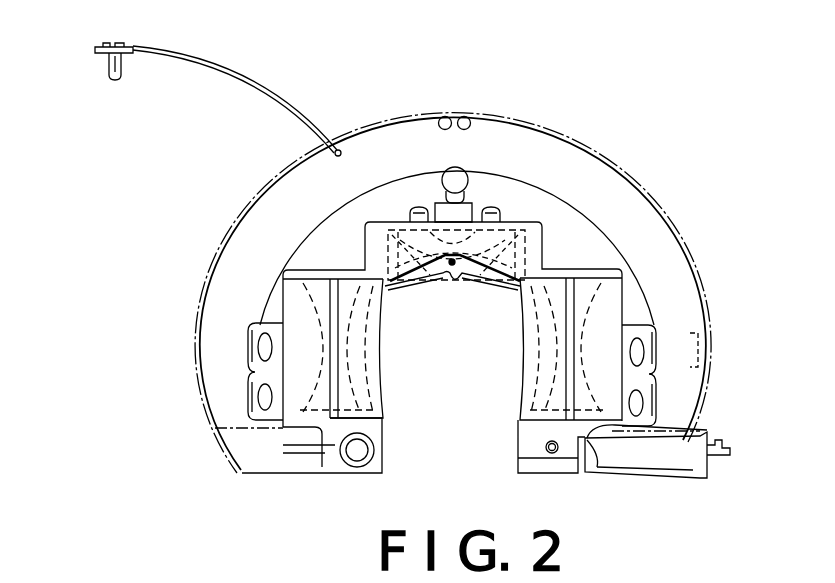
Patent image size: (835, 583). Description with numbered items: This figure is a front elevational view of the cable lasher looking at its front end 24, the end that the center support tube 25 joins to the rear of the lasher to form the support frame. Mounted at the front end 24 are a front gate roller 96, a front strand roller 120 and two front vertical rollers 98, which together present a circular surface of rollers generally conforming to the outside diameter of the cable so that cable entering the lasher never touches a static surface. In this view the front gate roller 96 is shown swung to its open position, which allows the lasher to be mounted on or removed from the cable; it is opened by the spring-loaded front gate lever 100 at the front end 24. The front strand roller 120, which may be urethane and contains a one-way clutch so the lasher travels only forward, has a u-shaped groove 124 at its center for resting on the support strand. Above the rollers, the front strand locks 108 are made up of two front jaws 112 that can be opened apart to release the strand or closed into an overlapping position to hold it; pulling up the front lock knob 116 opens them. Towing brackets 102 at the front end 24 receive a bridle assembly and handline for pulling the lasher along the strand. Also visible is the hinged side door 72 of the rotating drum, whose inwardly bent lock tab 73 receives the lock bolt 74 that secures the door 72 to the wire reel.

The front end 24 is at (560, 115).
The center support tube 25 is at (387, 420).
The side door 72 is at (247, 78).
The lock tab 73 is at (100, 50).
The lock bolt 74 is at (107, 70).
The front gate roller 96 is at (693, 453).
The front vertical rollers 98 is at (305, 400).
The front gate lever 100 is at (306, 446).
The towing brackets 102 is at (258, 372).
The front strand locks 108 is at (412, 208).
The front jaws 112 is at (368, 224).
The front lock knob 116 is at (458, 170).
The front strand roller 120 is at (505, 268).
The u-shaped groove 124 is at (450, 282).